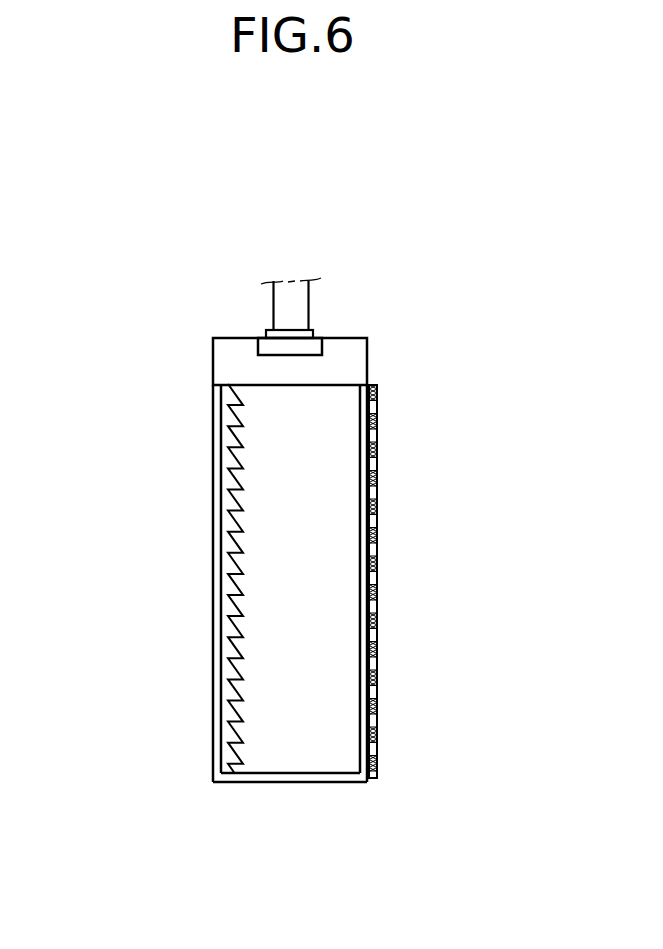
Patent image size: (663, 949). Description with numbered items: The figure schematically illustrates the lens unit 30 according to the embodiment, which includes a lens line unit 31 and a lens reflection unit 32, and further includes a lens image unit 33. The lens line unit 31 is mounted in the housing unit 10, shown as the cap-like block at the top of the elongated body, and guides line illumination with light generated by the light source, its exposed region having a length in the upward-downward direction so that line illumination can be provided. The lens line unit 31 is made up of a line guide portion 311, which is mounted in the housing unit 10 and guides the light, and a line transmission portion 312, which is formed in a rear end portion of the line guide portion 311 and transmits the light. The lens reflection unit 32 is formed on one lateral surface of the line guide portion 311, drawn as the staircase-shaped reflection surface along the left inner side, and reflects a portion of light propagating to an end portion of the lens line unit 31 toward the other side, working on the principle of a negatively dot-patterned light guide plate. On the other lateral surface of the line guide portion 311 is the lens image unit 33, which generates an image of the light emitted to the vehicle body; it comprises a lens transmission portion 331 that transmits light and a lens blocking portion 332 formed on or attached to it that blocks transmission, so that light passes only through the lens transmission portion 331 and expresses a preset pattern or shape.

The housing unit 10 is at (236, 367).
The lens unit 30 is at (441, 490).
The lens line unit 31 is at (110, 653).
The line guide portion 311 is at (213, 656).
The line transmission portion 312 is at (266, 777).
The lens reflection unit 32 is at (231, 537).
The lens image unit 33 is at (483, 683).
The lens transmission portion 331 is at (379, 733).
The lens blocking portion 332 is at (379, 692).